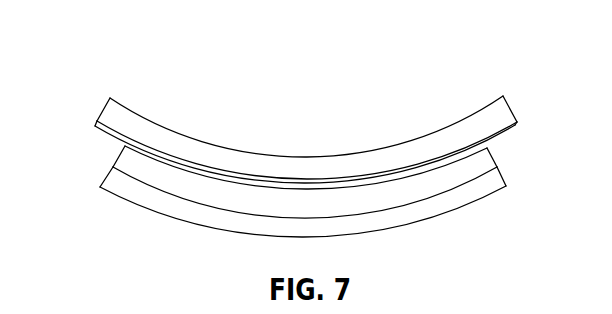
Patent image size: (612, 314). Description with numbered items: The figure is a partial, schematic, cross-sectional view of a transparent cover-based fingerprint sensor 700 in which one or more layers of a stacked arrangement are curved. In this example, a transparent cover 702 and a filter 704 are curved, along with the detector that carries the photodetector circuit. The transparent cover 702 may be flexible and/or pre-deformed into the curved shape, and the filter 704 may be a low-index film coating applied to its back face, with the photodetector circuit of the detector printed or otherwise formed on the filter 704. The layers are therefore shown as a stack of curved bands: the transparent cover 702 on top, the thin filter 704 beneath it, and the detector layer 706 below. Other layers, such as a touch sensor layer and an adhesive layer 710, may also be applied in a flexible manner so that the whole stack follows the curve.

The fingerprint sensor 700 is at (506, 60).
The transparent cover 702 is at (512, 103).
The filter 704 is at (494, 154).
The lower curved layer 706 is at (507, 185).
The adhesive layer 710 is at (123, 143).